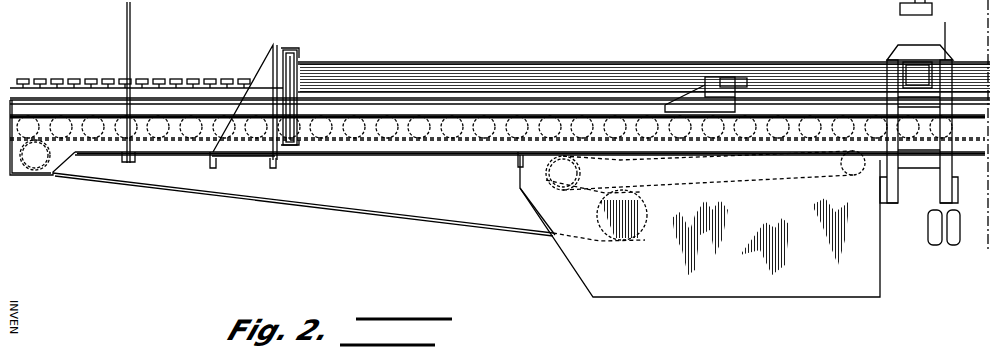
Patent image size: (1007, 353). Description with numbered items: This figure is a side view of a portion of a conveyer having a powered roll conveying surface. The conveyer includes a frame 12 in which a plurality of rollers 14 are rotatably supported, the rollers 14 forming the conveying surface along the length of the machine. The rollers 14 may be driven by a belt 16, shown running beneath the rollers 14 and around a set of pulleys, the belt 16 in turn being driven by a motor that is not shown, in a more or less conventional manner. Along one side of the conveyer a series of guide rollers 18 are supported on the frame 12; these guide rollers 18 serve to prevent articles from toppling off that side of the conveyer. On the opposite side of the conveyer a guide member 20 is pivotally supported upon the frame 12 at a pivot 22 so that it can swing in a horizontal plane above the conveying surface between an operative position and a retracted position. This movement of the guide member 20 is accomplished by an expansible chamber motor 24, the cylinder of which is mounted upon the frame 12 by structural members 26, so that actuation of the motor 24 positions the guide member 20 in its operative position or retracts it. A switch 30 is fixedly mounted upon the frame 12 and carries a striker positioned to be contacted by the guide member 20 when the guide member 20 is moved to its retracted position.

The frame 12 is at (417, 149).
The rollers 14 is at (722, 143).
The belt 16 is at (485, 143).
The guide rollers 18 is at (160, 82).
The guide member 20 is at (632, 70).
The pivot 22 is at (311, 30).
The expansible chamber motor 24 is at (930, 75).
The structural members 26 is at (888, 75).
The switch 30 is at (725, 80).